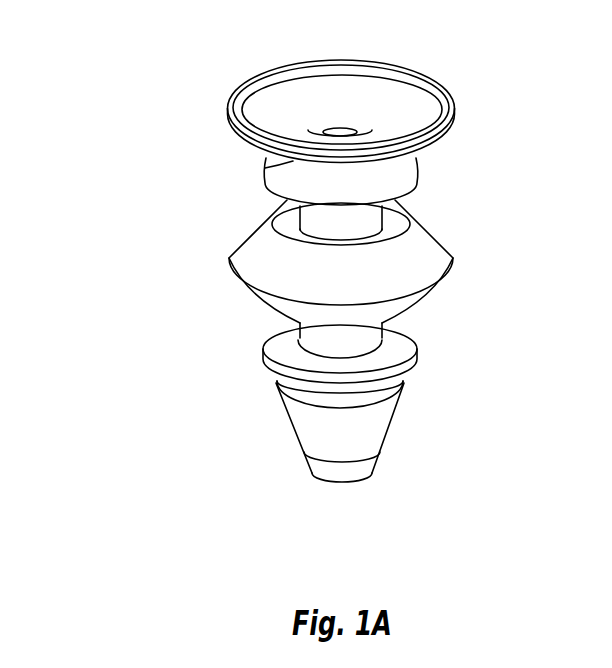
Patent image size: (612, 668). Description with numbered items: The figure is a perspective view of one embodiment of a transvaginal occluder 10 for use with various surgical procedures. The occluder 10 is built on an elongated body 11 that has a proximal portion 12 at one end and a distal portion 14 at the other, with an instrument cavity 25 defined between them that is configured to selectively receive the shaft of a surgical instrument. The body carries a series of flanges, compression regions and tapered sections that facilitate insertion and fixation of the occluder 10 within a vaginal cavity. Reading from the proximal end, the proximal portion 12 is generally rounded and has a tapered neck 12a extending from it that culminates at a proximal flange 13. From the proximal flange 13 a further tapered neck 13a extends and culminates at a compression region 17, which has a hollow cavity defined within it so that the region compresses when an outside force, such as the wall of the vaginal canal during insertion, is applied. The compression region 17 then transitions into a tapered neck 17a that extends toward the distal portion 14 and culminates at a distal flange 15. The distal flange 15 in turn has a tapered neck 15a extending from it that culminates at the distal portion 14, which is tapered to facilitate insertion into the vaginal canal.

The occluder 10 is at (106, 175).
The elongated body 11 is at (446, 231).
The proximal portion 12 is at (228, 113).
The tapered neck 12a is at (265, 168).
The proximal flange 13 is at (264, 185).
The tapered neck 13a is at (388, 212).
The distal portion 14 is at (314, 475).
The distal flange 15 is at (264, 357).
The tapered neck 15a is at (402, 384).
The compression region 17 is at (230, 262).
The tapered neck 17a is at (292, 330).
The instrument cavity 25 is at (338, 118).